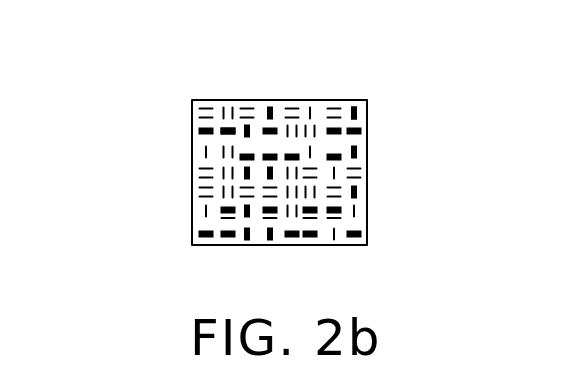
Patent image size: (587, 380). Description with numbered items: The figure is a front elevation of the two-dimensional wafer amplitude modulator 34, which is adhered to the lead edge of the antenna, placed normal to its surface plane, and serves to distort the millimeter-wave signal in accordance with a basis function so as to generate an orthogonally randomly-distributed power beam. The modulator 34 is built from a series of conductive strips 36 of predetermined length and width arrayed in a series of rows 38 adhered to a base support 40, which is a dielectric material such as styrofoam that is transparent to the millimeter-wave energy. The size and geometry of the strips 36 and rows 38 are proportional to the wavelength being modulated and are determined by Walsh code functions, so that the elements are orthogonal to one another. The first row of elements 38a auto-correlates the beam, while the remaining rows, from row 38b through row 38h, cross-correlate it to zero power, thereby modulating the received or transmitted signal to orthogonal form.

The wafer amplitude modulator 34 is at (266, 182).
The conductive strips 36 is at (353, 110).
The rows 38 is at (266, 123).
The first row of elements 38a is at (377, 103).
The second row of elements 38b is at (377, 125).
The last row of elements 38h is at (375, 225).
The base support 40 is at (192, 145).